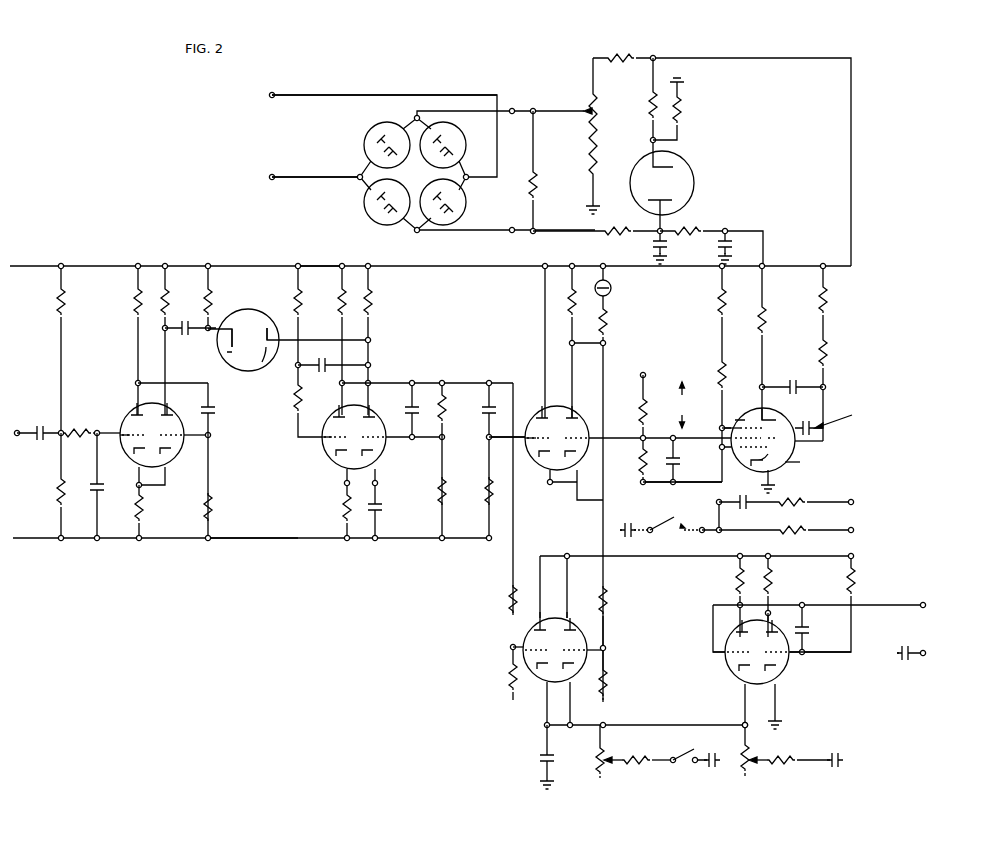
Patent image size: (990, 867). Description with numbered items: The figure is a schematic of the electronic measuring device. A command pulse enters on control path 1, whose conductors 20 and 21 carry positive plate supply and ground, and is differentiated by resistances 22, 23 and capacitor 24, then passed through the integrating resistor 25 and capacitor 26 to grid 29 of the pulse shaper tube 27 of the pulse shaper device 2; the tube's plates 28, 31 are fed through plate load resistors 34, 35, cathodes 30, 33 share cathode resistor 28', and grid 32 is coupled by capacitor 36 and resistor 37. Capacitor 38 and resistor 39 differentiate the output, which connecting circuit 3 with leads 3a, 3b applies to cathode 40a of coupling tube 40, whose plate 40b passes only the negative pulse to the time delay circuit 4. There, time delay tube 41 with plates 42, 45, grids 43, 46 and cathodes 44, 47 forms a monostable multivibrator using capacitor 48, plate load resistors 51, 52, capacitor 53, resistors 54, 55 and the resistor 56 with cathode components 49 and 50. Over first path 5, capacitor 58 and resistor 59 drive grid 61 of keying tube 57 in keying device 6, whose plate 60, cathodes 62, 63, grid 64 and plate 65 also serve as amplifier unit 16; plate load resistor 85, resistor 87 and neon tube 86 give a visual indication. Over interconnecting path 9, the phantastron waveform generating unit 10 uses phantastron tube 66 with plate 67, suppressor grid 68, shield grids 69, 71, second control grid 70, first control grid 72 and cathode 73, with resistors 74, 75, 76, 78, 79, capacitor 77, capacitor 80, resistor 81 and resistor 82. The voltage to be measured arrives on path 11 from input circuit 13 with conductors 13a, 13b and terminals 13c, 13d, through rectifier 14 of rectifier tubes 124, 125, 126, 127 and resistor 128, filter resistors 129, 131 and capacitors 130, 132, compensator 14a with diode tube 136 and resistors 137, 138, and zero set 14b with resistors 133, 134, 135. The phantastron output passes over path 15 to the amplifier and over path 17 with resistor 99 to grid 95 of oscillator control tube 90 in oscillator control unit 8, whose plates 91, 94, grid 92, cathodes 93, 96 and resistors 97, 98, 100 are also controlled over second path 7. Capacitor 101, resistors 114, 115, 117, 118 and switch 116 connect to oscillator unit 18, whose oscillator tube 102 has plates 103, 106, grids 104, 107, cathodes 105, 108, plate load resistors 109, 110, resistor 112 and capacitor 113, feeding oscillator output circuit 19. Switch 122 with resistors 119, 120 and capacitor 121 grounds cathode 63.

The control path 1 is at (17, 362).
The pulse shaper device 2 is at (171, 238).
The connecting circuit 3 is at (259, 248).
The connecting circuit lead 3a is at (270, 278).
The connecting circuit lead 3b is at (284, 536).
The time delay circuit 4 is at (381, 248).
The first path 5 is at (507, 428).
The keying device 6 is at (487, 351).
The second path 7 is at (519, 484).
The oscillator control unit 8 is at (590, 639).
The interconnecting path 9 is at (683, 405).
The phantastron waveform generating unit 10 is at (890, 443).
The path 11 is at (793, 328).
The input circuit 13 is at (339, 135).
The input conductor 13a is at (378, 86).
The input conductor 13b is at (310, 185).
The terminal 13c is at (512, 114).
The terminal 13d is at (512, 226).
The rectifier circuit arrangement 14 is at (412, 154).
The compensator 14a is at (752, 149).
The zero set 14b is at (577, 41).
The path 15 is at (618, 450).
The amplifier unit 16 is at (549, 518).
The path 17 is at (620, 568).
The oscillator unit 18 is at (805, 677).
The oscillator output circuit 19 is at (902, 637).
The control conductor 20 is at (36, 261).
The control conductor 21 is at (38, 533).
The resistance 22 is at (76, 290).
The resistance 23 is at (52, 480).
The capacitor 24 is at (46, 419).
The resistor 25 is at (90, 444).
The capacitor 26 is at (94, 478).
The pulse shaper tube 27 is at (146, 427).
The plate 28 is at (148, 402).
The cathode resistor 28' is at (154, 513).
The grid 29 is at (122, 434).
The cathode 30 is at (130, 454).
The plate 31 is at (169, 414).
The grid 32 is at (176, 433).
The cathode 33 is at (170, 452).
The plate load resistor 34 is at (132, 294).
The plate load resistor 35 is at (164, 296).
The capacitor 36 is at (219, 408).
The resistor 37 is at (216, 510).
The capacitor 38 is at (192, 337).
The resistor 39 is at (206, 294).
The coupling tube 40 is at (288, 333).
The cathode 40a is at (212, 352).
The plate 40b is at (257, 359).
The time delay tube 41 is at (356, 427).
The plate 42 is at (381, 412).
The control grid 43 is at (380, 444).
The cathode 44 is at (374, 464).
The plate 45 is at (340, 411).
The control grid 46 is at (315, 429).
The cathode 47 is at (328, 452).
The capacitor 48 is at (322, 360).
The cathode resistor 49 is at (338, 506).
The capacitor 50 is at (386, 500).
The plate load resistor 51 is at (351, 334).
The plate load resistor 52 is at (379, 334).
The capacitor 53 is at (430, 410).
The resistor 54 is at (447, 410).
The resistor 55 is at (434, 488).
The tapped resistor 56 is at (314, 290).
The keying tube 57 is at (557, 366).
The capacitor 58 is at (508, 410).
The resistor 59 is at (486, 488).
The plate 60 is at (544, 412).
The control grid 61 is at (538, 455).
The cathode 62 is at (549, 476).
The cathode 63 is at (574, 464).
The control grid 64 is at (578, 434).
The plate 65 is at (572, 416).
The phantastron tube 66 is at (763, 431).
The plate 67 is at (773, 406).
The suppressor grid 68 is at (782, 426).
The shield grid 69 is at (735, 429).
The second control grid 70 is at (793, 443).
The shield grid 71 is at (740, 478).
The first control grid 72 is at (793, 465).
The cathode 73 is at (769, 474).
The resistor 74 is at (715, 304).
The resistor 75 is at (717, 370).
The resistor 76 is at (765, 314).
The capacitor 77 is at (799, 376).
The resistor 78 is at (830, 298).
The resistor 79 is at (830, 357).
The capacitor 80 is at (674, 464).
The resistor 81 is at (636, 466).
The resistor 82 is at (652, 412).
The plate load resistor 85 is at (568, 298).
The neon tube 86 is at (611, 288).
The resistor 87 is at (609, 318).
The oscillator control tube 90 is at (555, 617).
The plate 91 is at (529, 620).
The control grid 92 is at (510, 646).
The cathode 93 is at (544, 684).
The plate 94 is at (573, 632).
The control grid 95 is at (583, 670).
The cathode 96 is at (562, 705).
The resistor 97 is at (500, 600).
The resistor 98 is at (500, 670).
The resistor 99 is at (612, 604).
The resistor 100 is at (622, 688).
The capacitor 101 is at (536, 758).
The oscillator tube 102 is at (819, 641).
The plate 103 is at (726, 635).
The control grid 104 is at (732, 668).
The cathode 105 is at (740, 680).
The plate 106 is at (782, 617).
The control grid 107 is at (784, 658).
The cathode 108 is at (792, 687).
The plate load resistor 109 is at (733, 585).
The plate load resistor 110 is at (769, 585).
The resistor 112 is at (851, 585).
The capacitor 113 is at (810, 632).
The resistor 114 is at (588, 769).
The resistor 115 is at (650, 750).
The single throw switch 116 is at (695, 751).
The resistor 117 is at (741, 756).
The resistor 118 is at (786, 756).
The resistor 119 is at (798, 528).
The resistor 120 is at (798, 500).
The capacitor 121 is at (754, 512).
The single throw switch 122 is at (671, 518).
The rectifier tube 124 is at (359, 203).
The rectifier tube 125 is at (462, 193).
The rectifier tube 126 is at (367, 130).
The rectifier tube 127 is at (454, 131).
The resistor 128 is at (538, 183).
The resistor 129 is at (596, 244).
The capacitor 130 is at (651, 252).
The resistor 131 is at (686, 224).
The capacitor 132 is at (736, 231).
The resistor 133 is at (628, 64).
The resistor 134 is at (596, 134).
The resistor 135 is at (594, 154).
The diode tube 136 is at (688, 164).
The resistor 137 is at (640, 104).
The resistor 138 is at (684, 106).